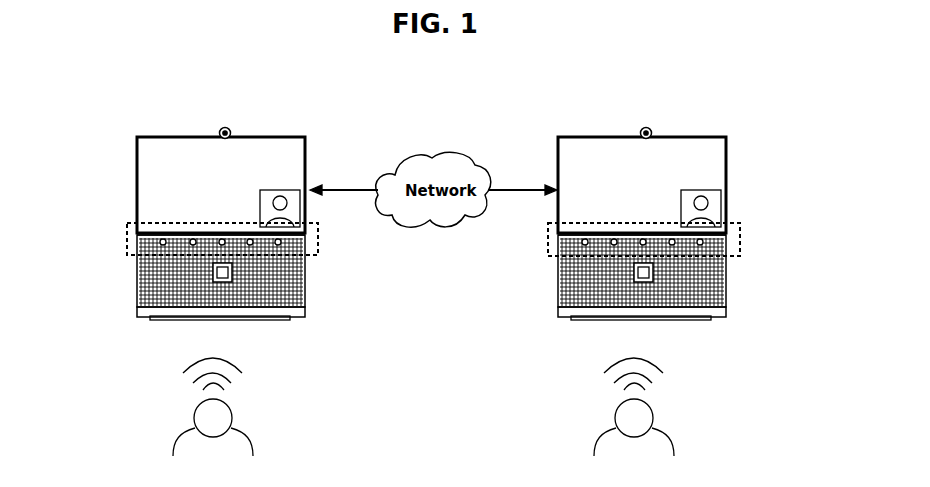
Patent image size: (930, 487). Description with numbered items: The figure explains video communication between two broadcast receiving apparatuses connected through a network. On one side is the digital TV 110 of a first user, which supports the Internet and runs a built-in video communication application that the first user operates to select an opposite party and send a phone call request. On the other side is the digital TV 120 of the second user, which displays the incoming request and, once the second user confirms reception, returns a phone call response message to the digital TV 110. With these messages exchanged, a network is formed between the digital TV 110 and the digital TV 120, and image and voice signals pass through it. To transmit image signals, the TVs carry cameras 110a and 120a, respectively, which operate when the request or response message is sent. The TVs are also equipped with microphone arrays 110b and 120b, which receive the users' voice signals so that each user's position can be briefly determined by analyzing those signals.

The digital TV 110 is at (137, 165).
The camera 110a is at (226, 126).
The microphone array 110b is at (127, 235).
The digital TV 120 is at (728, 160).
The camera 120a is at (646, 126).
The microphone array 120b is at (740, 233).